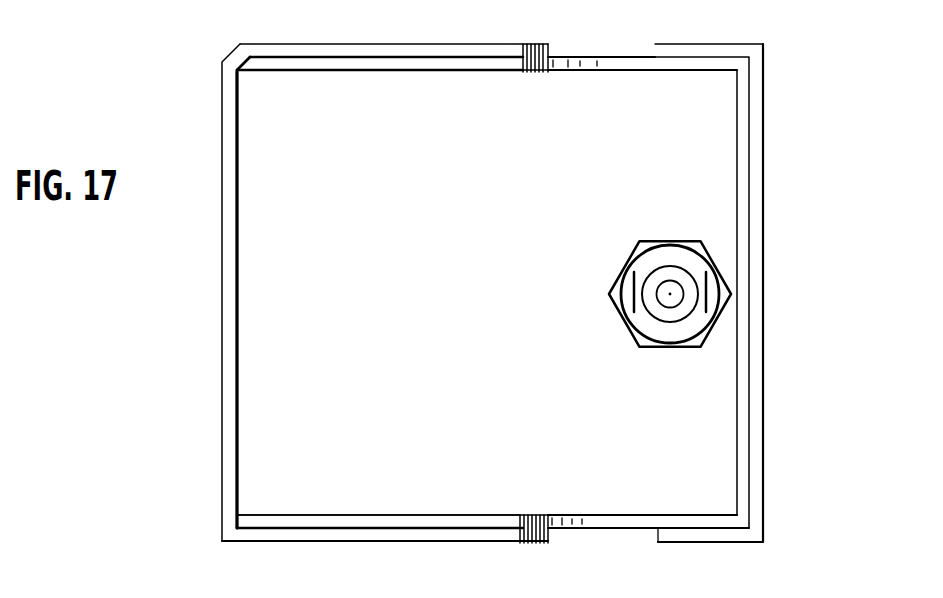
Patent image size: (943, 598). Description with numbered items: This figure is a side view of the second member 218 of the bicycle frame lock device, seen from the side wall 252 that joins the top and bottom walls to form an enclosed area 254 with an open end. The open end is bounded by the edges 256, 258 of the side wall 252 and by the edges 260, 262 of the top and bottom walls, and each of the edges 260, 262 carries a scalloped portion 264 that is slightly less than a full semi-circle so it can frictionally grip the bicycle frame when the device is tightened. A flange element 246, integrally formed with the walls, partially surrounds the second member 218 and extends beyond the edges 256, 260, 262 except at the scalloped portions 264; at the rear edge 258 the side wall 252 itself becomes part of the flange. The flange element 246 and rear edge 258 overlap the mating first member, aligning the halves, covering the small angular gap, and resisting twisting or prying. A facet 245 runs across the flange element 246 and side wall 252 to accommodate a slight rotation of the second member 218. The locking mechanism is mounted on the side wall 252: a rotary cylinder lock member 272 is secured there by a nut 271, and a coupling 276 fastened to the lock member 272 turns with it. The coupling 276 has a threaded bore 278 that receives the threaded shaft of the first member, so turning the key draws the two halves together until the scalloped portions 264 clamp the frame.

The second member 218 is at (770, 97).
The facet 245 is at (242, 45).
The flange element 246 is at (275, 46).
The side wall 252 is at (222, 286).
The enclosed area 254 is at (368, 232).
The edge of side wall 256 is at (742, 429).
The rear edge of side wall 258 is at (228, 362).
The edge of top wall 260 is at (420, 65).
The edge of bottom wall 262 is at (332, 518).
The scalloped portion 264 is at (618, 66).
The nut 271 is at (683, 250).
The rotary cylinder lock member 272 is at (646, 268).
The coupling 276 is at (678, 310).
The threaded bore 278 is at (664, 297).